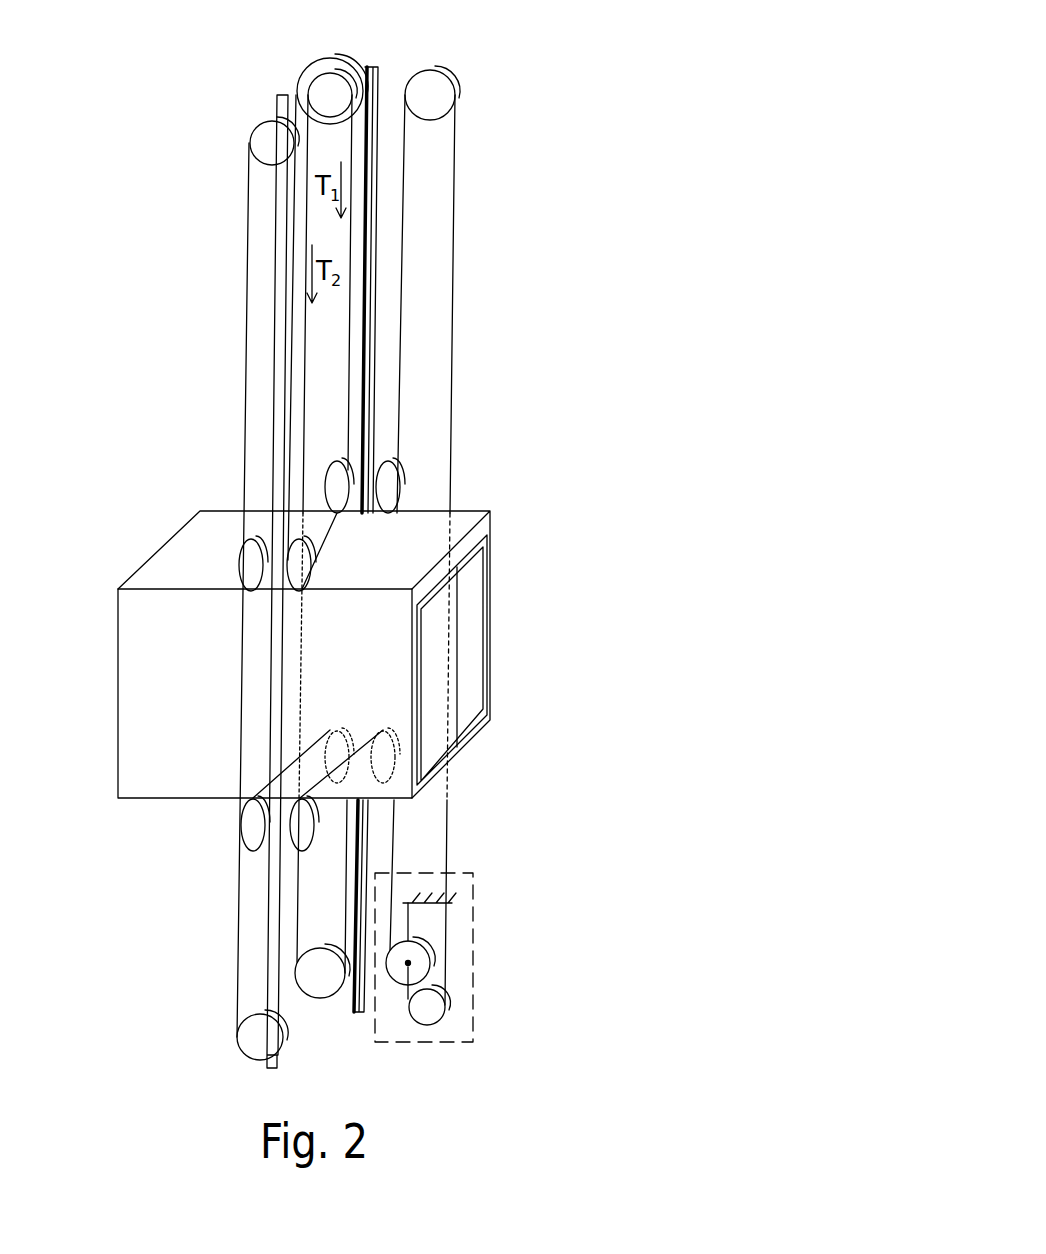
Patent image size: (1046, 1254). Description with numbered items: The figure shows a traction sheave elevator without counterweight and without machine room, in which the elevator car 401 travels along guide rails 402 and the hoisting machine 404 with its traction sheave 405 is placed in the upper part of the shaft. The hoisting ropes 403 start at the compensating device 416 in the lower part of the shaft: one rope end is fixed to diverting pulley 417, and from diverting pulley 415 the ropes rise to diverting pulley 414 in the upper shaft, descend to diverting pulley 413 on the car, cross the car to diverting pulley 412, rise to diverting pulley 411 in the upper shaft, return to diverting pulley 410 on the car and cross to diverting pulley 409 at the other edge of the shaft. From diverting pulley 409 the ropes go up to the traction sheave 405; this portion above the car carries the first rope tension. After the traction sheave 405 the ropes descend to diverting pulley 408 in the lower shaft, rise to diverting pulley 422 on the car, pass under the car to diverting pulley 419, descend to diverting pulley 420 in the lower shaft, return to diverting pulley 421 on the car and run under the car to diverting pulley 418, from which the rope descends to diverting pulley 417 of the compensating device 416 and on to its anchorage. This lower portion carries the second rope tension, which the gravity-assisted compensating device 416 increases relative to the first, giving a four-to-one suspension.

The elevator car 401 is at (472, 617).
The guide rails 402 is at (273, 1070).
The hoisting ropes 403 is at (452, 412).
The hoisting machine 404 is at (316, 60).
The traction sheave 405 is at (320, 97).
The diverting pulley 408 is at (312, 980).
The diverting pulley 409 is at (330, 490).
The diverting pulley 410 is at (247, 568).
The diverting pulley 411 is at (272, 150).
The diverting pulley 412 is at (302, 568).
The diverting pulley 413 is at (390, 488).
The diverting pulley 414 is at (435, 92).
The diverting pulley 415 is at (430, 1006).
The compensating device 416 is at (438, 1046).
The diverting pulley 417 is at (420, 962).
The diverting pulley 418 is at (385, 760).
The diverting pulley 419 is at (250, 824).
The diverting pulley 420 is at (257, 1043).
The diverting pulley 421 is at (300, 845).
The diverting pulley 422 is at (340, 760).